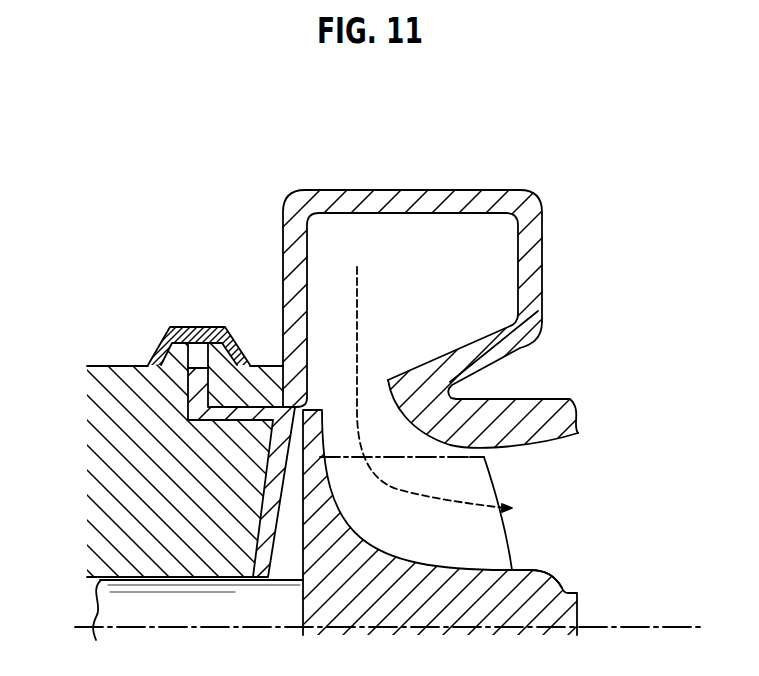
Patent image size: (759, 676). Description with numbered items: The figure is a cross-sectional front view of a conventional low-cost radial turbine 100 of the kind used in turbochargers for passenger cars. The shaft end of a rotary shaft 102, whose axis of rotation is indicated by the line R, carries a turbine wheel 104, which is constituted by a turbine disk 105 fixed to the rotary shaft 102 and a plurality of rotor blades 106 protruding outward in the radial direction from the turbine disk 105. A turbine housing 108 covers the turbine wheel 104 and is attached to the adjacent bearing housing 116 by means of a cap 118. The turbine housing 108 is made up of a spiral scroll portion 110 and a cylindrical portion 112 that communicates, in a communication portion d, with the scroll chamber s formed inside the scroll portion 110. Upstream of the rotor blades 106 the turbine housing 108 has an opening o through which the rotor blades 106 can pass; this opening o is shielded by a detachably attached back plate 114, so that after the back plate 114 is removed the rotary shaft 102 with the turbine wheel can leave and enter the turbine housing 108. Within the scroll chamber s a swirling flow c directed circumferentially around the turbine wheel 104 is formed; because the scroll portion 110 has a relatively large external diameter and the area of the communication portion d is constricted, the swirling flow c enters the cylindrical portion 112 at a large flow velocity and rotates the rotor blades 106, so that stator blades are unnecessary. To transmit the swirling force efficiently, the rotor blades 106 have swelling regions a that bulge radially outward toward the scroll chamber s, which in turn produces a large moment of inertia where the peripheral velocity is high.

The radial turbine 100 is at (510, 136).
The rotary shaft 102 is at (130, 605).
The turbine wheel 104 is at (578, 553).
The turbine disk 105 is at (560, 583).
The rotor blades 106 is at (500, 547).
The turbine housing 108 is at (542, 272).
The scroll portion 110 is at (347, 190).
The cylindrical portion 112 is at (552, 399).
The back plate 114 is at (188, 405).
The bearing housing 116 is at (120, 366).
The cap 118 is at (193, 326).
The rotation axis R is at (703, 627).
The scroll chamber s is at (426, 277).
The communication portion d is at (367, 398).
The opening o is at (318, 405).
The swelling regions a is at (325, 413).
The swirling flow c is at (485, 503).